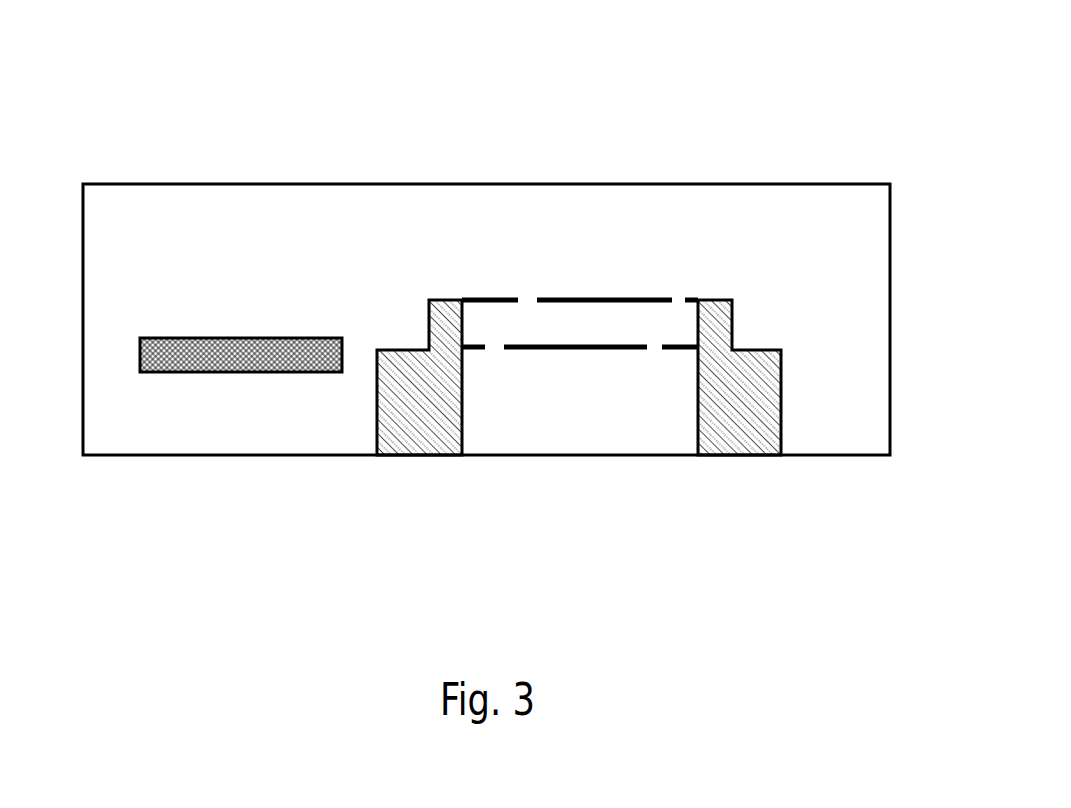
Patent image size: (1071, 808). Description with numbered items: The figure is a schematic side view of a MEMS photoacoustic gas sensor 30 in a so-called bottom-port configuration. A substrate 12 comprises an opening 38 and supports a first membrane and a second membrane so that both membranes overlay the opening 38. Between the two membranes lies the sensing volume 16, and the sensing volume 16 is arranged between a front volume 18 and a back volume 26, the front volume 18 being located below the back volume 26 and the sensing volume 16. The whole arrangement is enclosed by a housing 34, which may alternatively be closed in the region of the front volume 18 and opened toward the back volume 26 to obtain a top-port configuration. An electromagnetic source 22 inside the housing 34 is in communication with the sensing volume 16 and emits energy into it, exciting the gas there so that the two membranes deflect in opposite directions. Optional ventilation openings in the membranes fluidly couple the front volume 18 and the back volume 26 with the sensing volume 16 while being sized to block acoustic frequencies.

The MEMS photoacoustic gas sensor 30 is at (870, 40).
The housing 34 is at (840, 456).
The substrate 12 is at (771, 398).
The electromagnetic source 22 is at (212, 338).
The sensing volume 16 is at (486, 330).
The front volume 18 is at (568, 440).
The opening 38 is at (620, 466).
The back volume 26 is at (364, 278).